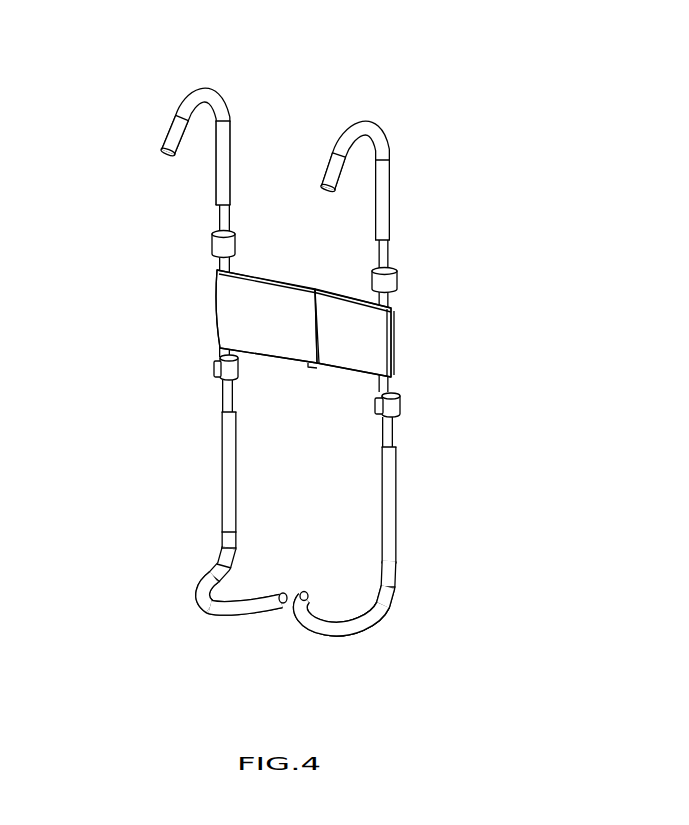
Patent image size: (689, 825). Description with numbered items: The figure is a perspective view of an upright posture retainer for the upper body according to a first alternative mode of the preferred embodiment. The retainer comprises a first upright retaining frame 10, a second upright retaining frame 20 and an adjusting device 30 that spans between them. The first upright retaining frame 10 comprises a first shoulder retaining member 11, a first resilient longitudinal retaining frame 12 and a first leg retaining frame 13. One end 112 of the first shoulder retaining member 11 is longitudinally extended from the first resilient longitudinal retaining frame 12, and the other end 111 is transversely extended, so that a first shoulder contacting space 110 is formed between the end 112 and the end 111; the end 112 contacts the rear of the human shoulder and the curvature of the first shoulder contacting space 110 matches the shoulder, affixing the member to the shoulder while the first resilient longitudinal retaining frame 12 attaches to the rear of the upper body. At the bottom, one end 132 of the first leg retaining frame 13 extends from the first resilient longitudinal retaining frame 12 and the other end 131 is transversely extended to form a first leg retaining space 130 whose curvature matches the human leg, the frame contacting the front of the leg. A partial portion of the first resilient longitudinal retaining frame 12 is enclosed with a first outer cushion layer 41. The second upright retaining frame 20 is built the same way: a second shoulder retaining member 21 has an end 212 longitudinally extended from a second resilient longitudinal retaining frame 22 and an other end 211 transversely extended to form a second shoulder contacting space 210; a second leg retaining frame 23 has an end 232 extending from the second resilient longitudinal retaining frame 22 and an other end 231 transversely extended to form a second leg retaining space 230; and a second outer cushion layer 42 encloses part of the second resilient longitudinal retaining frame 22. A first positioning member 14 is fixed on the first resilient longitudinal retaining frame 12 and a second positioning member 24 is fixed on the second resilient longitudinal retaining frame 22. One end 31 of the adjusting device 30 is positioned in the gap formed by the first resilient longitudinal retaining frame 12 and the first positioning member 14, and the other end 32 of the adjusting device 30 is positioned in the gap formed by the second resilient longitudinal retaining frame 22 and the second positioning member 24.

The first upright retaining frame 10 is at (173, 358).
The first shoulder retaining member 11 is at (208, 100).
The first shoulder contacting space 110 is at (195, 133).
The other end of the first shoulder retaining member 111 is at (168, 140).
The end of the first shoulder retaining member 112 is at (222, 189).
The first resilient longitudinal retaining frame 12 is at (225, 397).
The first leg retaining frame 13 is at (233, 602).
The first leg retaining space 130 is at (243, 583).
The other end of the first leg retaining frame 131 is at (282, 593).
The end of the first leg retaining frame 132 is at (215, 573).
The first positioning member 14 is at (228, 368).
The second upright retaining frame 20 is at (420, 383).
The second shoulder retaining member 21 is at (363, 137).
The second shoulder contacting space 210 is at (414, 159).
The other end of the second shoulder retaining member 211 is at (335, 172).
The end of the second shoulder retaining member 212 is at (384, 222).
The second resilient longitudinal retaining frame 22 is at (388, 428).
The second leg retaining frame 23 is at (345, 625).
The second leg retaining space 230 is at (335, 603).
The other end of the second leg retaining frame 231 is at (306, 597).
The end of the second leg retaining frame 232 is at (385, 617).
The second positioning member 24 is at (392, 405).
The adjusting device 30 is at (350, 323).
The end of the adjusting device 31 is at (228, 300).
The other end of the adjusting device 32 is at (378, 338).
The first outer cushion layer 41 is at (226, 455).
The second outer cushion layer 42 is at (392, 485).